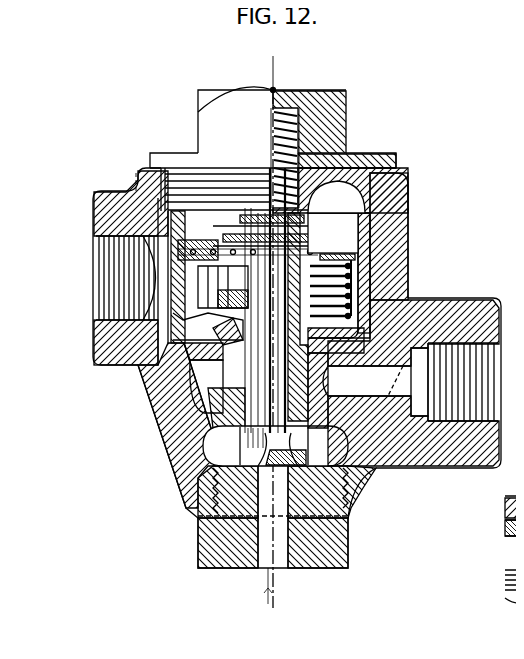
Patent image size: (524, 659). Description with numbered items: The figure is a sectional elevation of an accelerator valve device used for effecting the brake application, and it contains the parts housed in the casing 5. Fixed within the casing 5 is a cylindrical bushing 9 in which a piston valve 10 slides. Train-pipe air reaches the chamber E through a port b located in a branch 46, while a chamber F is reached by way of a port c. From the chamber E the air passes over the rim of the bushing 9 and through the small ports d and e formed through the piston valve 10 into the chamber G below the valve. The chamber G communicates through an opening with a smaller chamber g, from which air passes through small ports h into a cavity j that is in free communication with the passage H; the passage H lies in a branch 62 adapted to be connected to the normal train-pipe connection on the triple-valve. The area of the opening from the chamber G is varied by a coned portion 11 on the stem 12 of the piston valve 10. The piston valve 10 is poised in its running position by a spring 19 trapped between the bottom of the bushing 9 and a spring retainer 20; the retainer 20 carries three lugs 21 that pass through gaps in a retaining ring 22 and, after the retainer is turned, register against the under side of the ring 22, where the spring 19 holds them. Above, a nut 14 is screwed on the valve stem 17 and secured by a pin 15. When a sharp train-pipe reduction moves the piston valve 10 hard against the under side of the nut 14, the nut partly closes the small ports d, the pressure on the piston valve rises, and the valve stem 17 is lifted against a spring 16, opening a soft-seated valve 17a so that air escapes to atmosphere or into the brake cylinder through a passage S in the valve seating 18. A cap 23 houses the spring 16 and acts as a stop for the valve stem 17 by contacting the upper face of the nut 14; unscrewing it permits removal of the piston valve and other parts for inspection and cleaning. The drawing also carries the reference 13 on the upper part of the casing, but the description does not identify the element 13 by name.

The cap 23 is at (200, 105).
The spring 16 is at (290, 123).
The pin 15 is at (296, 160).
The piston valve 10 is at (196, 215).
The branch 46 is at (102, 342).
The chamber E is at (157, 277).
The small port e is at (175, 240).
The port b is at (100, 298).
The spring retainer 20 is at (126, 370).
The port c is at (172, 393).
The valve stem 17 is at (210, 398).
The stem 12 is at (275, 443).
The passage S is at (257, 526).
The valve seating 18 is at (312, 562).
The soft-seated valve 17a is at (330, 538).
The lugs 21 is at (218, 305).
The retaining ring 22 is at (362, 226).
The small port d is at (333, 229).
The nut 14 is at (340, 190).
The cylindrical bushing 9 is at (380, 258).
The casing 5 is at (345, 278).
The spring 19 is at (340, 296).
The body shoulder 13 is at (402, 182).
The coned portion 11 is at (460, 327).
The chamber G is at (470, 305).
The passage H is at (476, 391).
The smaller chamber g is at (367, 378).
The small ports h is at (352, 350).
The branch 62 is at (457, 460).
The cavity j is at (338, 455).
The chamber F is at (346, 462).